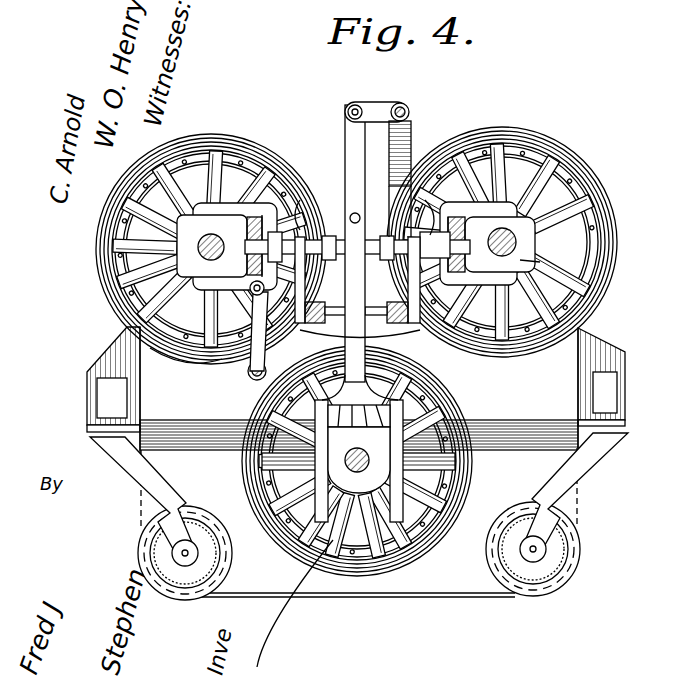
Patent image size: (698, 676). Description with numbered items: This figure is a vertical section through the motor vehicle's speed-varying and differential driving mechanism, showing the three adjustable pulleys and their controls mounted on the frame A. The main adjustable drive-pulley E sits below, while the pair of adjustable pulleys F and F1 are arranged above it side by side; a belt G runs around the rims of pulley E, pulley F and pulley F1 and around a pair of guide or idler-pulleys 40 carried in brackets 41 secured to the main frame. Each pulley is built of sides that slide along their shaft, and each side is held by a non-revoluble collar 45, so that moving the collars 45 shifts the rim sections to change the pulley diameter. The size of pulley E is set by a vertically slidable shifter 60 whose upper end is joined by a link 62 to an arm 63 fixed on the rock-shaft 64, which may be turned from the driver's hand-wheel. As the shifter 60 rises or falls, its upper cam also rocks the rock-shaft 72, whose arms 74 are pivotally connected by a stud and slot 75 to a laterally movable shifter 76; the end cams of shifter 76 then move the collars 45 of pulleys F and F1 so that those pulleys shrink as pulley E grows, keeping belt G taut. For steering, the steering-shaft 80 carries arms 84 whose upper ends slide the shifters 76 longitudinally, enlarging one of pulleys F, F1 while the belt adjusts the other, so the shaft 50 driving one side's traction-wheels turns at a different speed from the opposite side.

The adjustable pulley F1 is at (213, 134).
The adjustable pulley F is at (585, 162).
The adjustable drive-pulley E is at (368, 575).
The frame A is at (87, 400).
The belt G is at (453, 598).
The guide or idler-pulleys 40 is at (200, 598).
The brackets 41 is at (197, 248).
The collar 45 is at (190, 232).
The shaft 50 is at (540, 263).
The shifter 60 is at (440, 363).
The link 62 is at (345, 141).
The arm 63 is at (374, 102).
The rock-shaft 64 is at (412, 105).
The rock-shaft 72 is at (340, 330).
The arms 74 is at (372, 238).
The stud and slot connection 75 is at (283, 203).
The shifter 76 is at (458, 210).
The steering-shaft 80 is at (248, 377).
The arms 84 is at (186, 360).